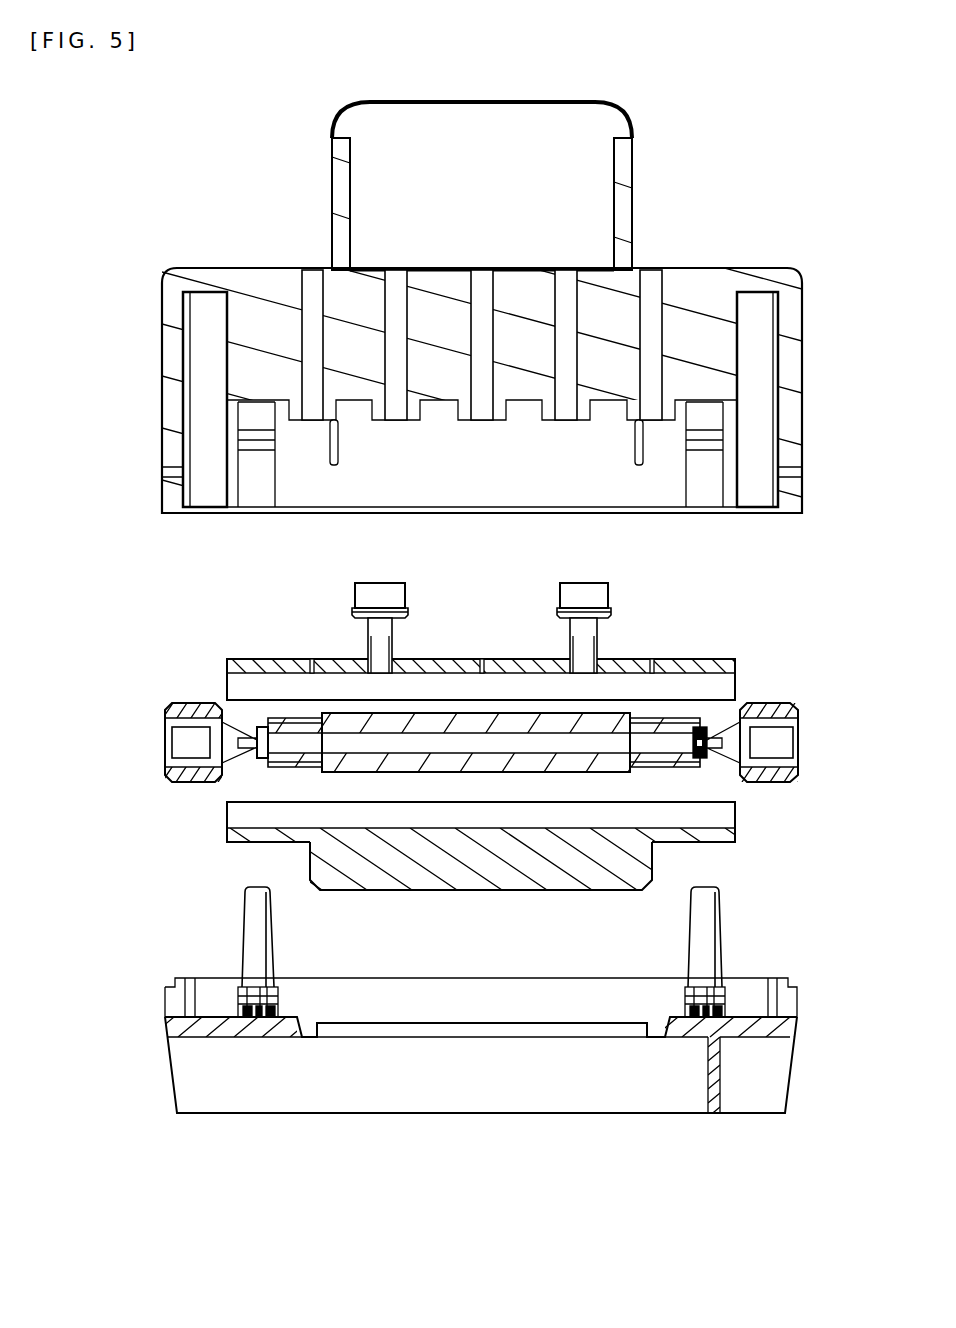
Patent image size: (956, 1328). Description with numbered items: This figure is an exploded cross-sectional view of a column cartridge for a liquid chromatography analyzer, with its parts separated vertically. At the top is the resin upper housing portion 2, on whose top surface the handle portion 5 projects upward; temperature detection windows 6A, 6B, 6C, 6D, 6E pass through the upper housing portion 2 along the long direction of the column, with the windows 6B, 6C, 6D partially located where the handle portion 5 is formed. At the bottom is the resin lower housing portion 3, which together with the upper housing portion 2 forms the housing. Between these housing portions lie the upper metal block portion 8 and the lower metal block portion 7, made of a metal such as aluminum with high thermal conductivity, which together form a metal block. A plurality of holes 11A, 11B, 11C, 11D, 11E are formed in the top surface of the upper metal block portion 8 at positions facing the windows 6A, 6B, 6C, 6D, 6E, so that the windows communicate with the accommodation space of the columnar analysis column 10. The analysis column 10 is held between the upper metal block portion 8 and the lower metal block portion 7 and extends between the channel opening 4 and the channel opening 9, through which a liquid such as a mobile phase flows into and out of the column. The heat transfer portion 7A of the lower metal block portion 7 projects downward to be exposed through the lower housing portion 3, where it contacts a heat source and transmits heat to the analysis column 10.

The upper housing portion 2 is at (710, 262).
The lower housing portion 3 is at (425, 1088).
The channel opening 4 is at (166, 740).
The handle portion 5 is at (627, 147).
The temperature detection window 6A is at (303, 261).
The temperature detection window 6B is at (397, 261).
The temperature detection window 6C is at (481, 261).
The temperature detection window 6D is at (558, 259).
The temperature detection window 6E is at (647, 259).
The lower metal block portion 7 is at (708, 840).
The heat transfer portion 7A is at (433, 890).
The upper metal block portion 8 is at (710, 652).
The channel opening 9 is at (800, 720).
The analysis column 10 is at (637, 735).
The hole 11A is at (303, 654).
The hole 11B is at (395, 654).
The hole 11C is at (480, 652).
The hole 11D is at (562, 650).
The hole 11E is at (645, 651).